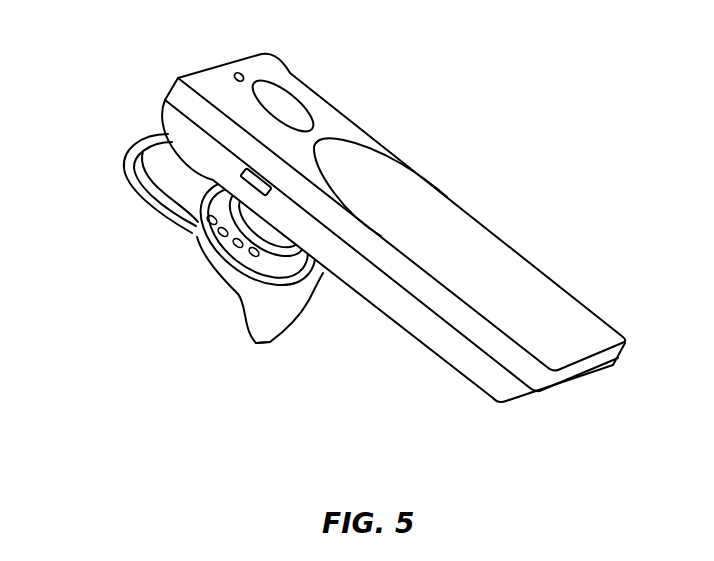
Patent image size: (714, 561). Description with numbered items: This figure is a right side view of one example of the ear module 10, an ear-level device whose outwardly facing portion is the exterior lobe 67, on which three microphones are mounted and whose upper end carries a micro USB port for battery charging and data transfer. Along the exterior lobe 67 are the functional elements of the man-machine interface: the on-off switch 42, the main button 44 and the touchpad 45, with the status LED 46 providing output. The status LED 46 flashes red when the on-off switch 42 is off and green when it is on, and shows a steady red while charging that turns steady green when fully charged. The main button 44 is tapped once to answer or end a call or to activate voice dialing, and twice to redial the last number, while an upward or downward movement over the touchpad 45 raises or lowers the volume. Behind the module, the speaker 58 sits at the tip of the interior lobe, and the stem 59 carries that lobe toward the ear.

The ear module 10 is at (492, 102).
The on-off switch 42 is at (246, 182).
The main button 44 is at (297, 98).
The touchpad 45 is at (487, 263).
The status LED 46 is at (234, 73).
The speaker 58 is at (257, 347).
The stem 59 is at (253, 308).
The exterior lobe 67 is at (432, 351).